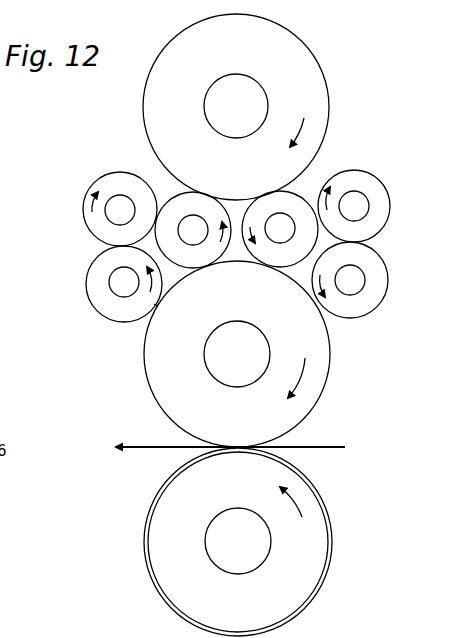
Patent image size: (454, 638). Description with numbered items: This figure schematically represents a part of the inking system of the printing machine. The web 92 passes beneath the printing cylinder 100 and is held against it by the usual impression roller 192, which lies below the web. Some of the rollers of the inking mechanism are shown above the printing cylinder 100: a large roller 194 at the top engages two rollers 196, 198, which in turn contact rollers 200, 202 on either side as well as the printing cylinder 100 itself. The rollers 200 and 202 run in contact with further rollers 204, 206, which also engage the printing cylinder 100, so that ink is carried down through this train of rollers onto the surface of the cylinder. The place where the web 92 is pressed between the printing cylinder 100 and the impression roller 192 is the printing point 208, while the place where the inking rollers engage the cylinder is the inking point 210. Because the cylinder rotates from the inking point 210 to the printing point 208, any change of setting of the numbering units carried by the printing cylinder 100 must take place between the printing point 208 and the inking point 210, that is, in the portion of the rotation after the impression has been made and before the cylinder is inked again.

The roller 194 is at (325, 105).
The roller 196 is at (202, 202).
The roller 198 is at (273, 198).
The roller 200 is at (98, 220).
The roller 202 is at (382, 215).
The roller 204 is at (102, 305).
The roller 206 is at (373, 297).
The printing cylinder 100 is at (323, 358).
The inking point 210 is at (155, 305).
The printing point 208 is at (234, 447).
The web 92 is at (330, 448).
The impression roller 192 is at (333, 557).